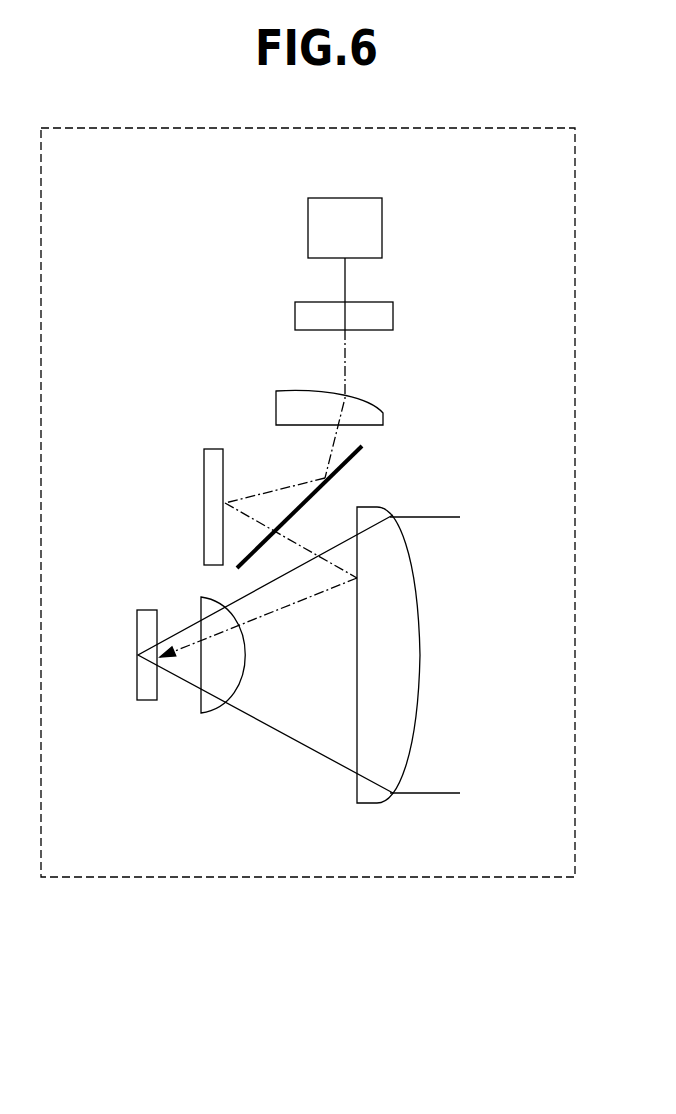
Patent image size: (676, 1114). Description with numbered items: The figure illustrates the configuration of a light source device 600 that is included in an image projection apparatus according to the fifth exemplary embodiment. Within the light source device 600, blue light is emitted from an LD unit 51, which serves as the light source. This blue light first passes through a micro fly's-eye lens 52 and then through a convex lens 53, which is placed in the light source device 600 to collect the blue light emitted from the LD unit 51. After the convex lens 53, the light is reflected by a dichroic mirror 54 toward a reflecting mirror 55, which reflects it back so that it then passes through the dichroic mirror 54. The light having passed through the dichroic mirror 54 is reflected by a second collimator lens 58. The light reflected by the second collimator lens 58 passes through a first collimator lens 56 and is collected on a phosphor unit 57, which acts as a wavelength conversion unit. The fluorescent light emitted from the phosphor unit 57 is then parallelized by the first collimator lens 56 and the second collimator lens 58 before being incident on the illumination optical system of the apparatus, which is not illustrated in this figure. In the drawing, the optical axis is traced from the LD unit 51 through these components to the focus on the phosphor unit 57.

The LD unit 51 is at (308, 226).
The micro fly's-eye lens 52 is at (393, 312).
The convex lens 53 is at (276, 408).
The dichroic mirror 54 is at (362, 446).
The reflecting mirror 55 is at (204, 500).
The first collimator lens 56 is at (207, 714).
The phosphor unit 57 is at (136, 688).
The second collimator lens 58 is at (420, 638).
The light source device 600 is at (325, 878).